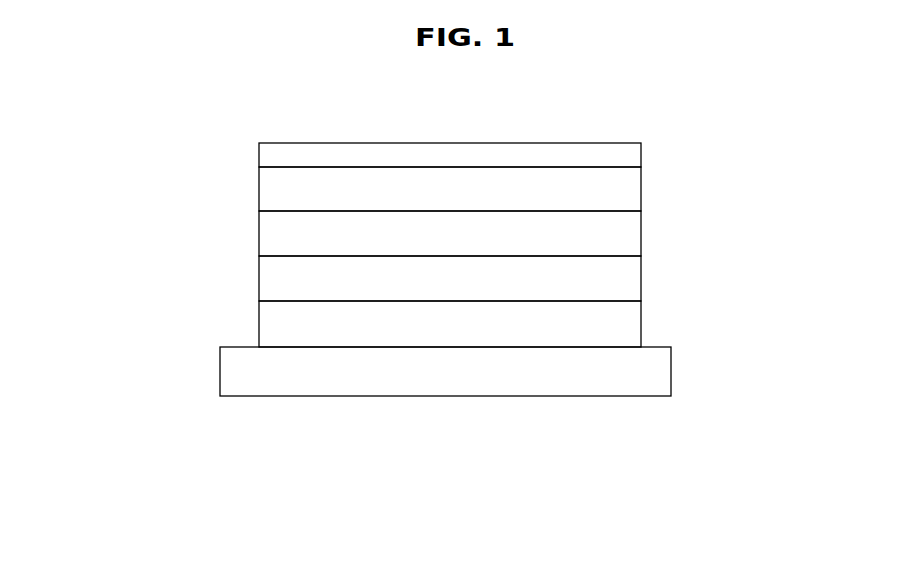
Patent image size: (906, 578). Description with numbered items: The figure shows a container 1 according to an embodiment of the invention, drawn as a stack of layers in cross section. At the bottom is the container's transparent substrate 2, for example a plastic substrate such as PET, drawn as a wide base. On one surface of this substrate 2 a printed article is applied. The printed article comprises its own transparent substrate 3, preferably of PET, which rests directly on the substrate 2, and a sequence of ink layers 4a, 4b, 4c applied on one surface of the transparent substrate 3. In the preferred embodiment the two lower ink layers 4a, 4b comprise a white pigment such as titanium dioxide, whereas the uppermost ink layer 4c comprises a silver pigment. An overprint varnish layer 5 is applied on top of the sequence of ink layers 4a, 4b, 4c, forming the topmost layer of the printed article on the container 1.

The container 1 is at (150, 373).
The transparent substrate 2 is at (647, 374).
The transparent substrate 3 is at (641, 325).
The ink layer 4a is at (641, 279).
The ink layer 4b is at (641, 236).
The ink layer 4c is at (641, 190).
The overprint varnish layer 5 is at (641, 153).